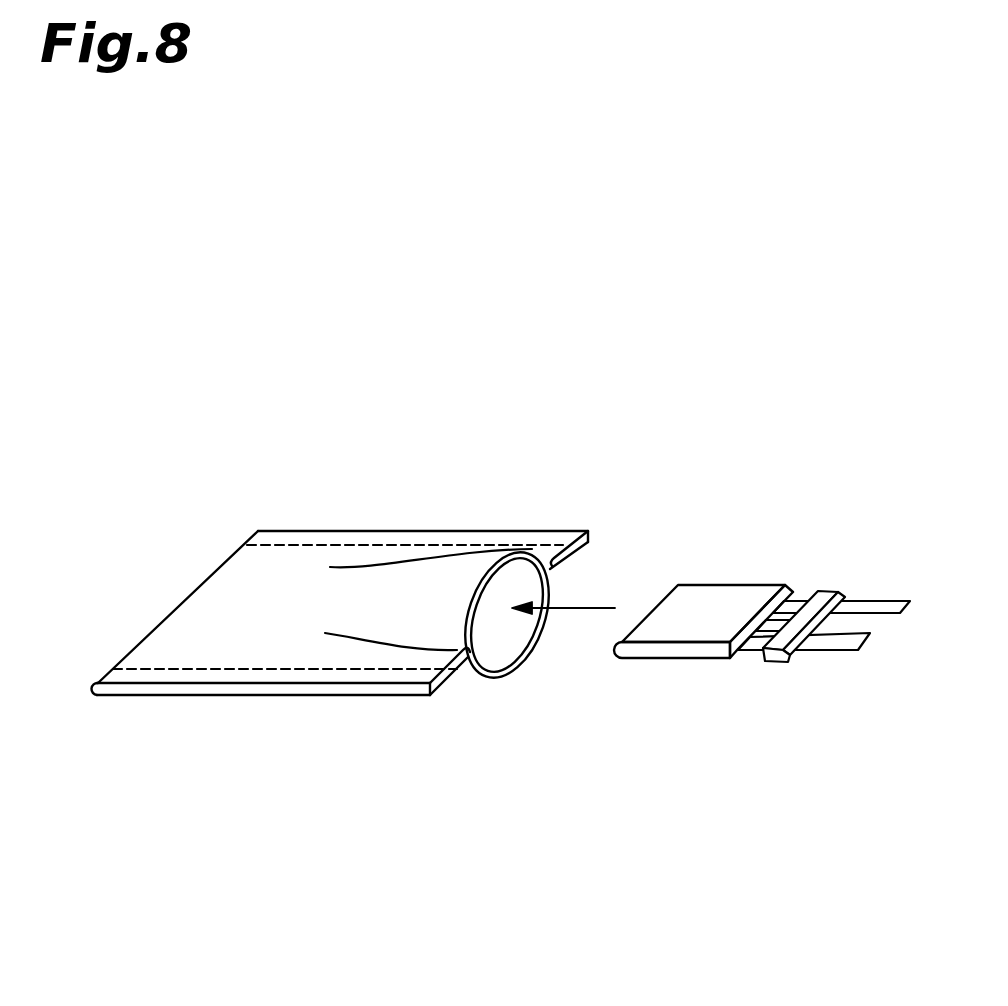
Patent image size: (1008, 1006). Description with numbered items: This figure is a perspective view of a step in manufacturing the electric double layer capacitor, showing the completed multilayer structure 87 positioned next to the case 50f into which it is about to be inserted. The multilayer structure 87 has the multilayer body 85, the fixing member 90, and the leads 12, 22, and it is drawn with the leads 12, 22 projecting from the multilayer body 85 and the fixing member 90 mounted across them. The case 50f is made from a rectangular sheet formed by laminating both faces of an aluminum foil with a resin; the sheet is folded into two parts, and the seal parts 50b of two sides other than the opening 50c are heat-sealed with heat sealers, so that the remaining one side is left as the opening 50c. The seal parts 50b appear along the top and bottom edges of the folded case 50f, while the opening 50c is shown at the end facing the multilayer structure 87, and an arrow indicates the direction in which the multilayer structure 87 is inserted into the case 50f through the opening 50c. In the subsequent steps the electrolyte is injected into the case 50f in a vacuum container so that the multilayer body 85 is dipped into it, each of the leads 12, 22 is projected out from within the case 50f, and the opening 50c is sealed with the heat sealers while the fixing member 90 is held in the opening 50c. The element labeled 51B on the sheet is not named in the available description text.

The case 50f is at (221, 511).
The seal parts 50b is at (328, 537).
The adhesive layer 51B is at (394, 583).
The opening 50c is at (556, 548).
The multilayer body 85 is at (728, 593).
The fixing member 90 is at (812, 590).
The lead 12 is at (862, 600).
The lead 22 is at (828, 651).
The multilayer structure 87 is at (762, 660).